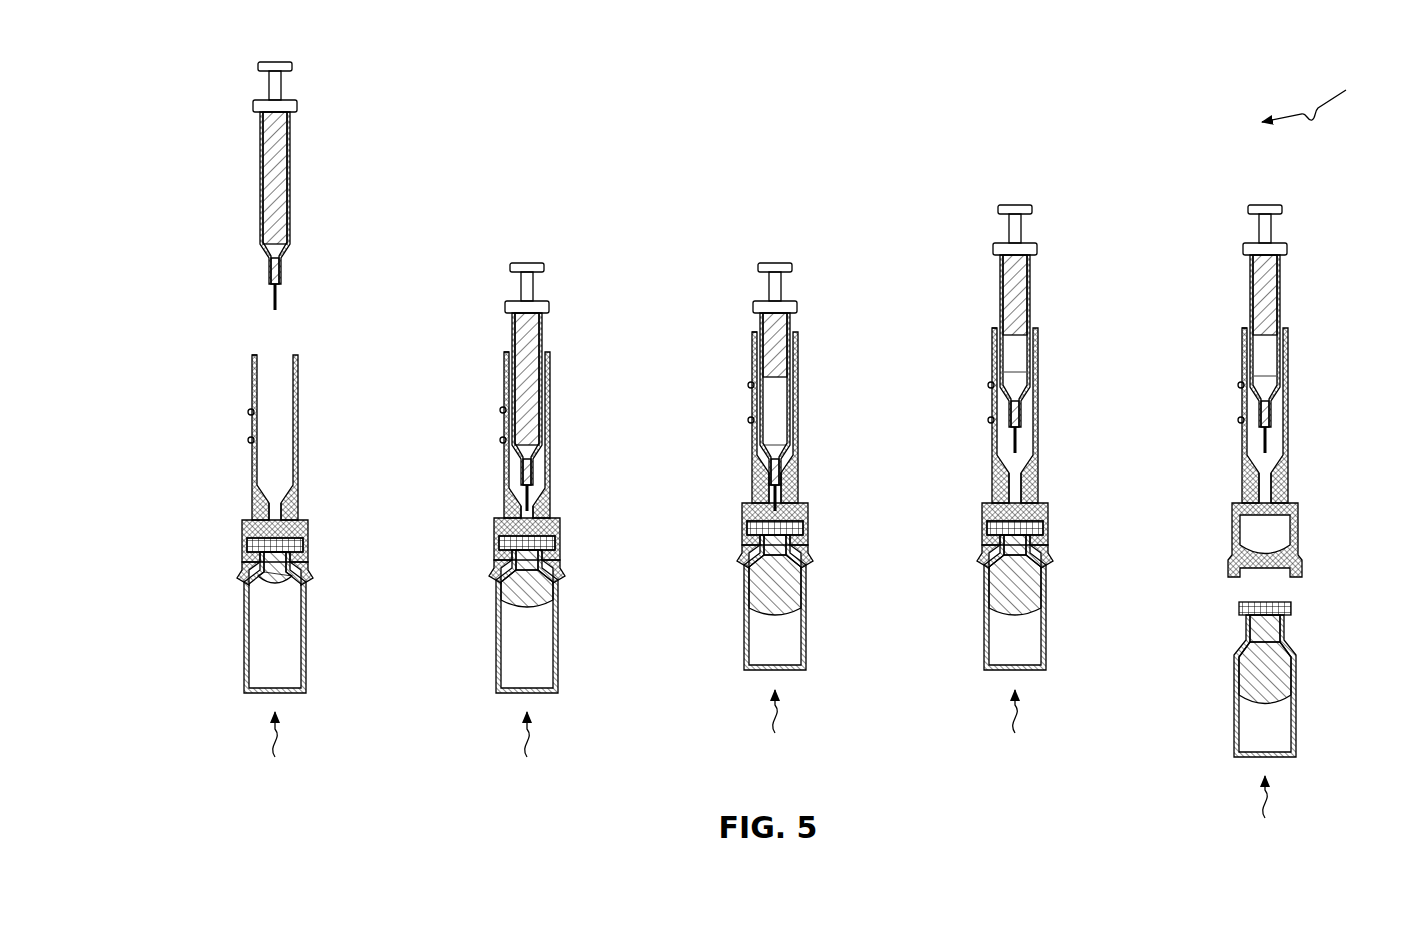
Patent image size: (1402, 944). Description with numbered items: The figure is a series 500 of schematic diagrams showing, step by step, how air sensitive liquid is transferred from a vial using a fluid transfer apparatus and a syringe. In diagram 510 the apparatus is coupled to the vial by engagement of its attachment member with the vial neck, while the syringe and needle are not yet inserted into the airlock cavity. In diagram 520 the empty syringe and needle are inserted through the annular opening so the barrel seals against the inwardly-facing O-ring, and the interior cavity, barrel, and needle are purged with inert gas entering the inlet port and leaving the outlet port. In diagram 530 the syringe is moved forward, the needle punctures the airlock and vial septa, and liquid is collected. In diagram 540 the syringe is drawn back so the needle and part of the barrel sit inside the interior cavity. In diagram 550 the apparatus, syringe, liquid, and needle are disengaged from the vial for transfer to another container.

The series of schematic diagrams 500 is at (1329, 98).
The diagram 510 is at (275, 747).
The diagram 520 is at (527, 747).
The diagram 530 is at (775, 724).
The diagram 540 is at (1015, 724).
The diagram 550 is at (1265, 809).